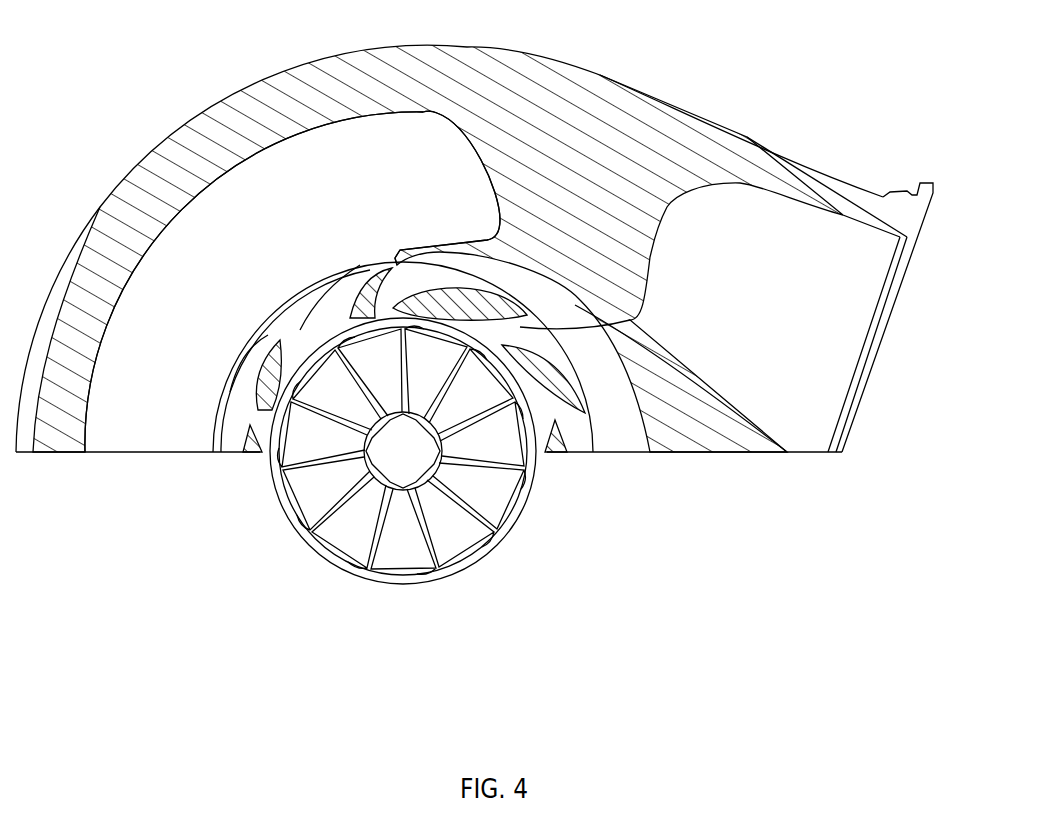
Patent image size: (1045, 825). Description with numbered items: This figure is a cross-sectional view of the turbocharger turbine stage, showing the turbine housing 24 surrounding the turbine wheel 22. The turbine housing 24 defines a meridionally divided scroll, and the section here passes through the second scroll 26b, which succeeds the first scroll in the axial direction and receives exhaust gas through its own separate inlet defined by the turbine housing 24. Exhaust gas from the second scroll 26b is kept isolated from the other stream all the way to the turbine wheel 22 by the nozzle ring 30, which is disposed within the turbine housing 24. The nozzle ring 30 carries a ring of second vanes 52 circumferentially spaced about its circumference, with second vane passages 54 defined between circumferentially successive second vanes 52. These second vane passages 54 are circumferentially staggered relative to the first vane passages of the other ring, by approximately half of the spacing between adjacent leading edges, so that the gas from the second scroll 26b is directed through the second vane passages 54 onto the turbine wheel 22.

The turbine wheel 22 is at (497, 500).
The turbine housing 24 is at (680, 130).
The second scroll 26b is at (238, 265).
The nozzle ring 30 is at (230, 392).
The second vanes 52 is at (365, 295).
The second vane passages 54 is at (292, 330).